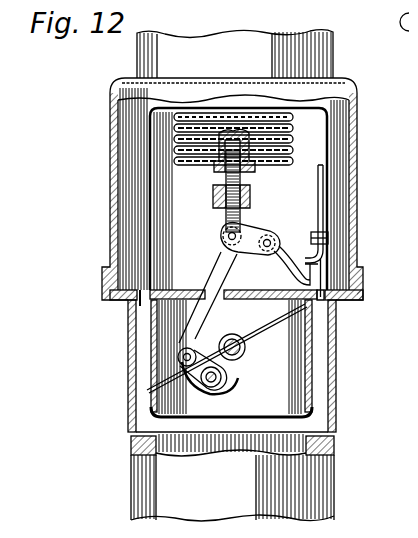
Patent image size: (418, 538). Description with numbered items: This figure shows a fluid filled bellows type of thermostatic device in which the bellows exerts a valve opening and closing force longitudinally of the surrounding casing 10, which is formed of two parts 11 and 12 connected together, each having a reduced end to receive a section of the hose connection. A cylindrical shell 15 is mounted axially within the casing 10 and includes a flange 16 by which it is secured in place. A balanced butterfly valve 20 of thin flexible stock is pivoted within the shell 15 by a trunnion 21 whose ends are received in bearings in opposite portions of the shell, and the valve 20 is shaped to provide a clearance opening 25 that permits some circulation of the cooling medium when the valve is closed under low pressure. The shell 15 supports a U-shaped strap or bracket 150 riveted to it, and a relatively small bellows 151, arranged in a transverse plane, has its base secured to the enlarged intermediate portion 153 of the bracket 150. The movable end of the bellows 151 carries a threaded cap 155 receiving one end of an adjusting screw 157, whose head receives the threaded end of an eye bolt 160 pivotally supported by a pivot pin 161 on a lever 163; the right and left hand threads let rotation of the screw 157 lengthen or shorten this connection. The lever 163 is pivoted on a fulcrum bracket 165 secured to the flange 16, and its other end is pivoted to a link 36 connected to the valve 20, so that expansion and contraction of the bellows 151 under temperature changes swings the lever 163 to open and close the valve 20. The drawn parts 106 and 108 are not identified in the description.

The casing 10 is at (359, 165).
The casing part 11 is at (357, 142).
The casing part 12 is at (329, 364).
The cylindrical shell 15 is at (312, 347).
The flange 16 is at (347, 291).
The control member or valve 20 is at (317, 380).
The trunnion 21 is at (308, 403).
The clearance opening 25 is at (313, 324).
The link 36 is at (334, 433).
The curved link 106 is at (300, 270).
The block 108 is at (328, 242).
The U-shaped strap or bracket 150 is at (344, 188).
The bellows 151 is at (175, 143).
The enlarged intermediate portion 153 is at (178, 108).
The threaded cap 155 is at (210, 171).
The adjusting screw 157 is at (216, 184).
The eye bolt 160 is at (220, 213).
The pivot pin 161 is at (222, 236).
The lever 163 is at (214, 279).
The bracket 165 is at (320, 266).